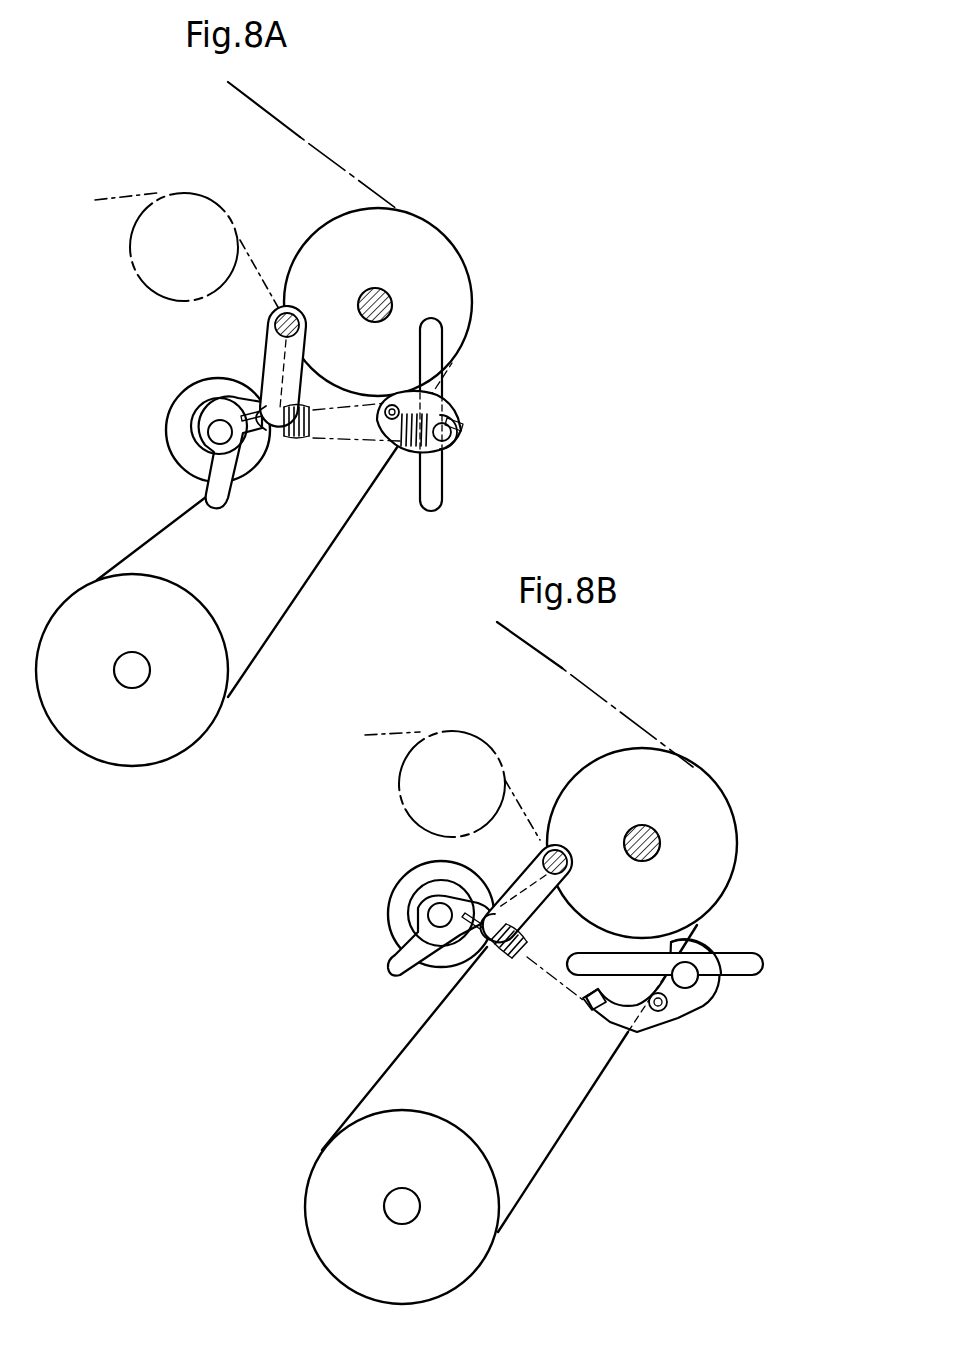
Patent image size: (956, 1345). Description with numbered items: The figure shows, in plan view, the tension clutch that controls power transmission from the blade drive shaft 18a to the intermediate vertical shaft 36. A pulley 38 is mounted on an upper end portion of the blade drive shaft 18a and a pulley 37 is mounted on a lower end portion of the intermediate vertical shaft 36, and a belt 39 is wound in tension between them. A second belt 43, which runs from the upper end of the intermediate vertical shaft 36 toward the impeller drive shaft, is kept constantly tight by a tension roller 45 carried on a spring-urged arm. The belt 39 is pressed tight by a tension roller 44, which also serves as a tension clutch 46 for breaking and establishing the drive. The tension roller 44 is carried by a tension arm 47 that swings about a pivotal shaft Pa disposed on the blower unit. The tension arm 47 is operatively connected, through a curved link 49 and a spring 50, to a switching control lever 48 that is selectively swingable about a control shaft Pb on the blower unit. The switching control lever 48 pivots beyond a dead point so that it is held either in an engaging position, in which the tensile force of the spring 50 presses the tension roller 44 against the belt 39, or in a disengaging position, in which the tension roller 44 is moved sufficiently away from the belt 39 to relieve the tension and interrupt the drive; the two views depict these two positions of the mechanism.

In FIG. 8A, the blade drive shaft 18a is at (132, 688).
In FIG. 8B, the blade drive shaft 18a is at (402, 1225).
In FIG. 8A, the intermediate vertical shaft 36 is at (377, 288).
In FIG. 8B, the intermediate vertical shaft 36 is at (642, 825).
In FIG. 8A, the pulley 37 is at (468, 280).
In FIG. 8B, the pulley 37 is at (720, 815).
In FIG. 8A, the pulley 38 is at (185, 598).
In FIG. 8B, the pulley 38 is at (455, 1140).
In FIG. 8A, the belt 39 is at (155, 530).
In FIG. 8B, the belt 39 is at (585, 1127).
In FIG. 8A, the belt 43 is at (345, 148).
In FIG. 8B, the belt 43 is at (595, 690).
In FIG. 8A, the tension roller 44 is at (170, 432).
In FIG. 8B, the tension roller 44 is at (390, 915).
In FIG. 8A, the tension roller 45 is at (137, 272).
In FIG. 8B, the tension roller 45 is at (398, 787).
In FIG. 8A, the tension clutch 46 is at (219, 426).
In FIG. 8B, the tension clutch 46 is at (441, 913).
In FIG. 8A, the tension arm 47 is at (262, 362).
In FIG. 8B, the tension arm 47 is at (530, 900).
In FIG. 8A, the switching control lever 48 is at (425, 495).
In FIG. 8B, the switching control lever 48 is at (622, 952).
In FIG. 8A, the curved link 49 is at (445, 400).
In FIG. 8B, the curved link 49 is at (603, 1013).
In FIG. 8A, the spring 50 is at (298, 440).
In FIG. 8B, the spring 50 is at (500, 965).
In FIG. 8A, the pivotal shaft Pa is at (280, 322).
In FIG. 8B, the pivotal shaft Pa is at (542, 858).
In FIG. 8A, the control shaft Pb is at (442, 453).
In FIG. 8B, the control shaft Pb is at (692, 1012).